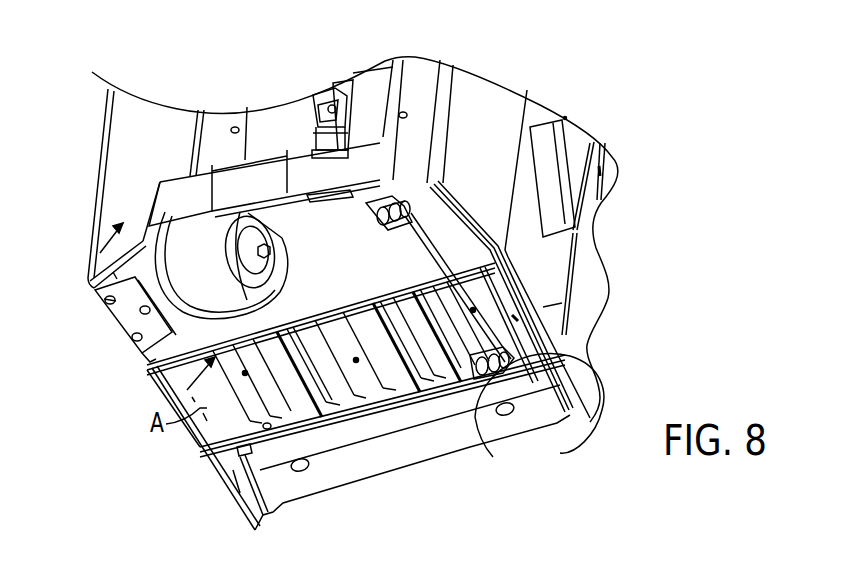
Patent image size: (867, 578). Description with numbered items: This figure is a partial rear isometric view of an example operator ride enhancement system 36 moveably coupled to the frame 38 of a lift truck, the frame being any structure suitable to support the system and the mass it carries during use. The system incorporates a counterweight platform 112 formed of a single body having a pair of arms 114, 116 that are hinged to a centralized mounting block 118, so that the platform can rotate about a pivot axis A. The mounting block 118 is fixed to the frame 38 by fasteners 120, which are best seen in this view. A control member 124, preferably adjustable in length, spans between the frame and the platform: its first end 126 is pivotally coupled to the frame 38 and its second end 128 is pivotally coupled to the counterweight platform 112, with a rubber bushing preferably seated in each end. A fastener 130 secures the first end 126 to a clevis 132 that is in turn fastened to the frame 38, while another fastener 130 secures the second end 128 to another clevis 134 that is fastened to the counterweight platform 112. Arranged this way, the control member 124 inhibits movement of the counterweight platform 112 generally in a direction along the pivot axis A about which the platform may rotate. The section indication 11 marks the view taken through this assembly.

The section line 11- 11 is at (164, 307).
The operator ride enhancement system 36 is at (382, 128).
The frame 38 is at (390, 405).
The counterweight platform 112 is at (333, 300).
The arm 114 is at (104, 300).
The arm 116 is at (140, 362).
The mounting block 118 is at (123, 317).
The fasteners 120 is at (148, 307).
The control member 124 is at (458, 312).
The first end 126 is at (453, 385).
The second end 128 is at (420, 258).
The fastener 130 is at (489, 293).
The clevis 132 is at (493, 457).
The clevis 134 is at (380, 230).